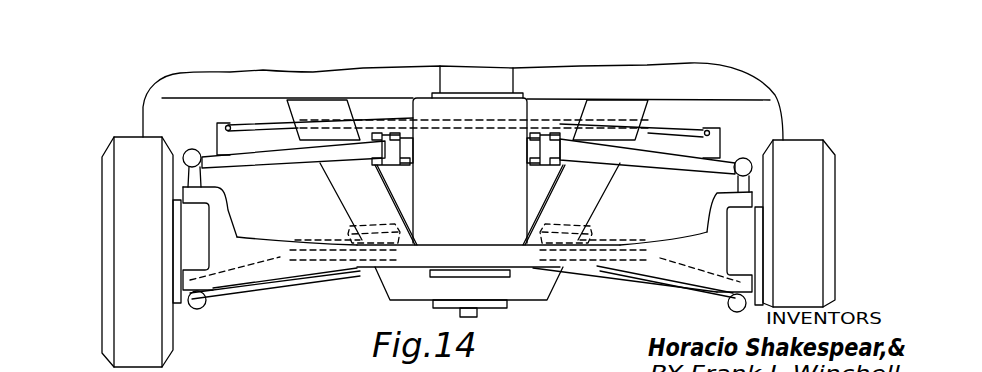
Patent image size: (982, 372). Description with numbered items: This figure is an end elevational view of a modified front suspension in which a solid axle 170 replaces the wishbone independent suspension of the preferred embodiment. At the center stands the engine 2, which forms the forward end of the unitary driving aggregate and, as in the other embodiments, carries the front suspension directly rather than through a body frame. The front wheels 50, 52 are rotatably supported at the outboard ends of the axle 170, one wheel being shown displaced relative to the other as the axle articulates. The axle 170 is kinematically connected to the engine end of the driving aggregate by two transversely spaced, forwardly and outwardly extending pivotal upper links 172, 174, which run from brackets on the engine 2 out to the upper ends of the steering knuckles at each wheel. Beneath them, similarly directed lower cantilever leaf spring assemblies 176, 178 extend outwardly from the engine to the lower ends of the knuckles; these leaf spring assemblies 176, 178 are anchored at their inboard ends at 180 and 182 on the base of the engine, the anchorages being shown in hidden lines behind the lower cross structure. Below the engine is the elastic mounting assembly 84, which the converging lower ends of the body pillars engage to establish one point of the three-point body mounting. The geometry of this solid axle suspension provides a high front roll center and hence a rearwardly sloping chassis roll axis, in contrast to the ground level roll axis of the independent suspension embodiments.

The vehicle engine 2 is at (520, 112).
The front wheel 50 is at (108, 263).
The front wheel 52 is at (837, 213).
The elastic mounting assembly 84 is at (483, 312).
The solid axle 170 is at (270, 233).
The upper link 172 is at (217, 158).
The upper link 174 is at (650, 160).
The lower cantilever leaf spring assembly 176 is at (262, 273).
The lower cantilever leaf spring assembly 178 is at (690, 273).
The inboard anchorage 180 is at (417, 243).
The inboard anchorage 182 is at (525, 230).